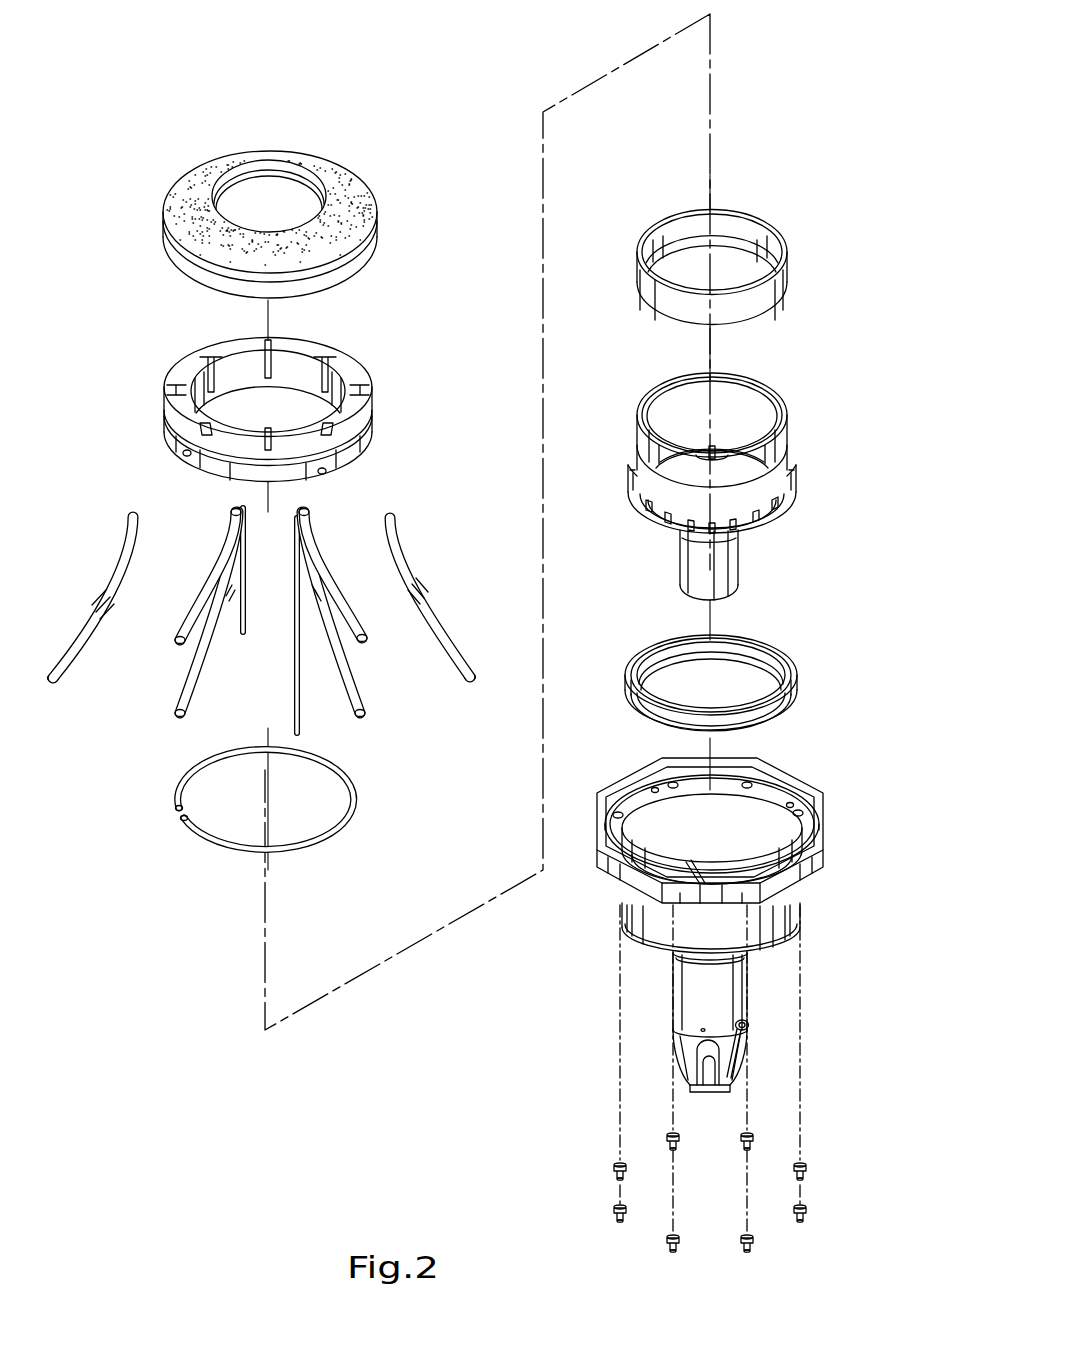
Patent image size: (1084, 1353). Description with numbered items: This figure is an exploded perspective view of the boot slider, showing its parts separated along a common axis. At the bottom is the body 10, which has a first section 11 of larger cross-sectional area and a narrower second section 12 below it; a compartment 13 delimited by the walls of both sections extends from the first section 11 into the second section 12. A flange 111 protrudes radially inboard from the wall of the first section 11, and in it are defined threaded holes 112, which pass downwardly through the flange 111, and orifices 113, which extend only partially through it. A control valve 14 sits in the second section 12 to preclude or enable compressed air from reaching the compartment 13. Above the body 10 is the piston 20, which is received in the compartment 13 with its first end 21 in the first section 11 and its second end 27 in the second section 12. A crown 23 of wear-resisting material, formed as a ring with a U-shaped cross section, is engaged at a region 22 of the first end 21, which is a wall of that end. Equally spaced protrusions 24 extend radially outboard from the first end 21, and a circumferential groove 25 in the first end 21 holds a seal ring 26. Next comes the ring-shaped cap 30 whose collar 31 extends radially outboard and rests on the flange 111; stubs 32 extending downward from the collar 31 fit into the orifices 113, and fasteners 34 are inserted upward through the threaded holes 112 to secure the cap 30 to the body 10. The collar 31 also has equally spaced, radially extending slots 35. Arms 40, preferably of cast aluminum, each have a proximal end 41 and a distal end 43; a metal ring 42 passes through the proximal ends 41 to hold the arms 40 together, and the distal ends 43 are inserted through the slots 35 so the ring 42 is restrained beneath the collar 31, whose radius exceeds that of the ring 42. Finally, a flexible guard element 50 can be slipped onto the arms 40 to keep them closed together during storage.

The body 10 is at (703, 925).
The first section 11 is at (775, 905).
The flange 111 is at (750, 838).
The threaded holes 112 is at (803, 814).
The orifices 113 is at (795, 805).
The second section 12 is at (730, 980).
The compartment 13 is at (790, 860).
The control valve 14 is at (749, 1026).
The piston 20 is at (797, 409).
The first end 21 is at (780, 478).
The region 22 is at (785, 450).
The crown 23 is at (780, 280).
The protrusions 24 is at (790, 510).
The groove 25 is at (770, 530).
The seal ring 26 is at (795, 675).
The second end 27 is at (725, 575).
The cap 30 is at (331, 410).
The collar 31 is at (353, 382).
The stubs 32 is at (294, 462).
The fasteners 34 is at (613, 1207).
The slots 35 is at (352, 400).
The arms 40 is at (269, 617).
The proximal end 41 is at (462, 679).
The ring 42 is at (355, 800).
The distal end 43 is at (394, 521).
The flexible guard element 50 is at (338, 192).